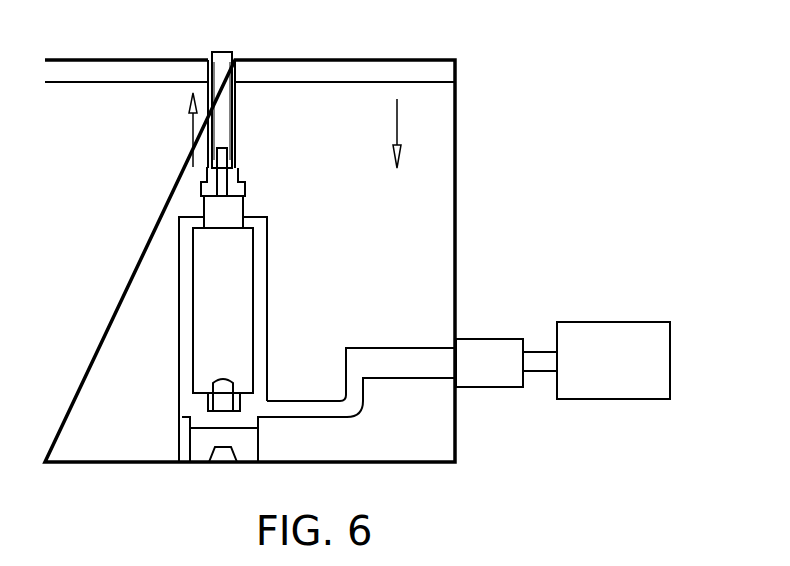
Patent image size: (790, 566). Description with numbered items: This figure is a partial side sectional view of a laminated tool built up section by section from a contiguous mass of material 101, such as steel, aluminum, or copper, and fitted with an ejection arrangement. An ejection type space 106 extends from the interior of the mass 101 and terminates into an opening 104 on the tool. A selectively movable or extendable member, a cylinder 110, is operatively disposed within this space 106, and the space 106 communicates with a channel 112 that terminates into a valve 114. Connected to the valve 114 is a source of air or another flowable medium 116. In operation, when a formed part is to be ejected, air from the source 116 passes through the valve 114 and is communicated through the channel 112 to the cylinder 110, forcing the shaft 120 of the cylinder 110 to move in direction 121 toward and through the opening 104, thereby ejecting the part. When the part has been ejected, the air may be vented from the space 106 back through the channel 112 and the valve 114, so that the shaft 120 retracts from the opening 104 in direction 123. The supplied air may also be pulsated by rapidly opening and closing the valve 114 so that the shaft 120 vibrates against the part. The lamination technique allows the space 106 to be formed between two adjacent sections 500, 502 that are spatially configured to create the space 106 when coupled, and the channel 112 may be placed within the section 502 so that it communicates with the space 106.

The contiguous mass of material 101 is at (438, 227).
The opening 104 is at (210, 62).
The ejection type space 106 is at (183, 375).
The cylinder 110 is at (253, 333).
The channel 112 is at (333, 409).
The valve 114 is at (493, 338).
The source of air or flowable medium 116 is at (652, 354).
The shaft 120 is at (220, 102).
The direction 121 is at (193, 137).
The direction 123 is at (397, 122).
The section 500 is at (146, 213).
The section 502 is at (361, 175).